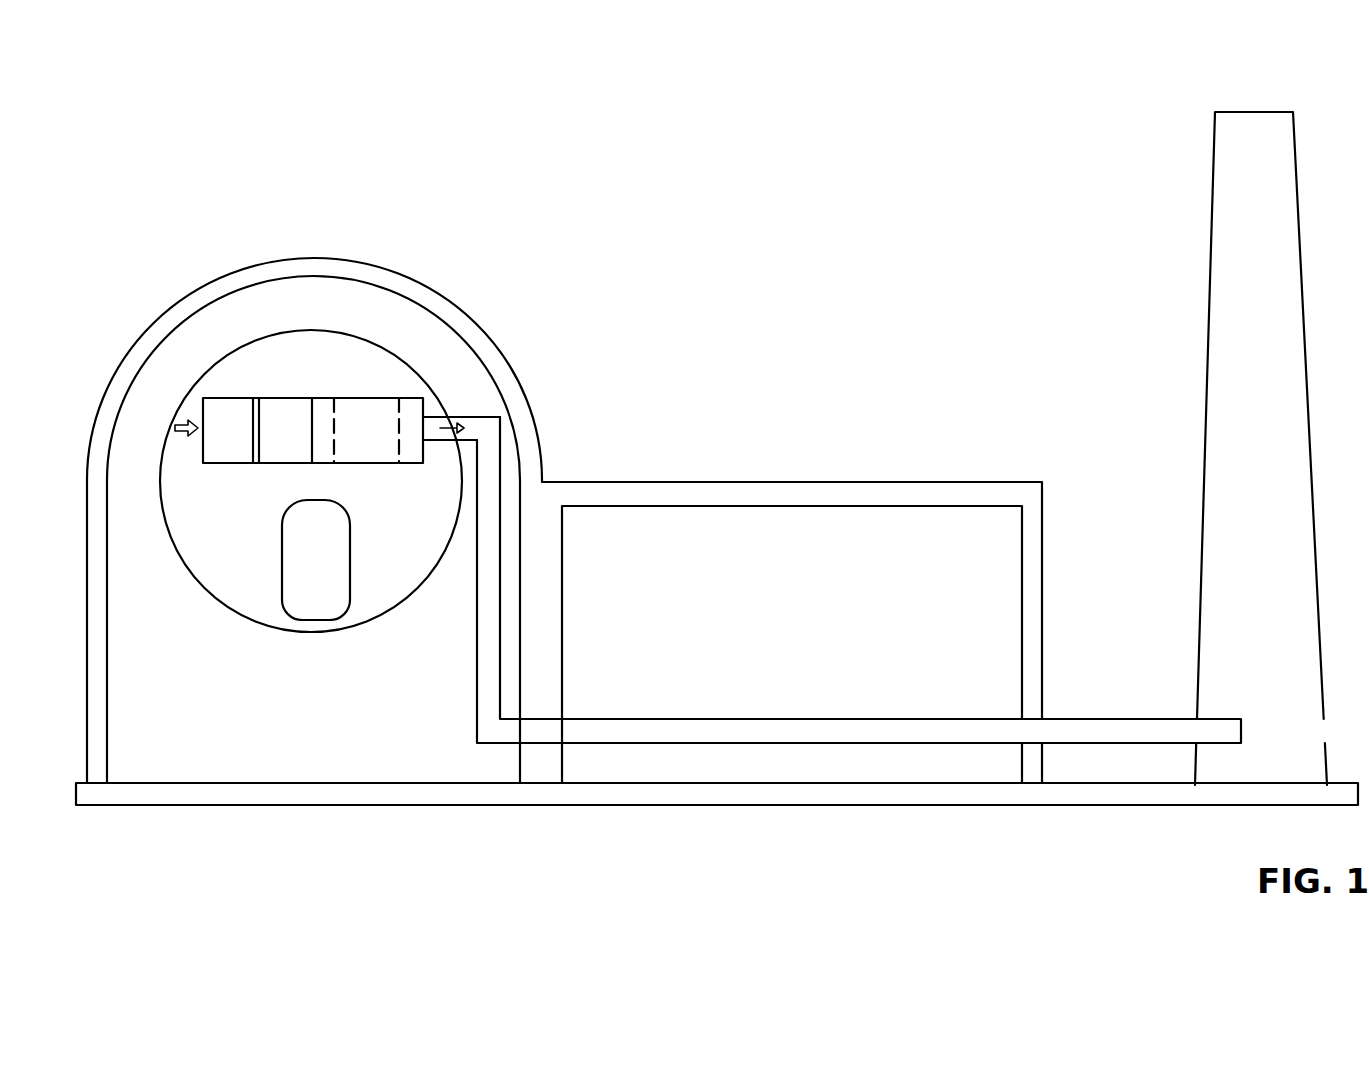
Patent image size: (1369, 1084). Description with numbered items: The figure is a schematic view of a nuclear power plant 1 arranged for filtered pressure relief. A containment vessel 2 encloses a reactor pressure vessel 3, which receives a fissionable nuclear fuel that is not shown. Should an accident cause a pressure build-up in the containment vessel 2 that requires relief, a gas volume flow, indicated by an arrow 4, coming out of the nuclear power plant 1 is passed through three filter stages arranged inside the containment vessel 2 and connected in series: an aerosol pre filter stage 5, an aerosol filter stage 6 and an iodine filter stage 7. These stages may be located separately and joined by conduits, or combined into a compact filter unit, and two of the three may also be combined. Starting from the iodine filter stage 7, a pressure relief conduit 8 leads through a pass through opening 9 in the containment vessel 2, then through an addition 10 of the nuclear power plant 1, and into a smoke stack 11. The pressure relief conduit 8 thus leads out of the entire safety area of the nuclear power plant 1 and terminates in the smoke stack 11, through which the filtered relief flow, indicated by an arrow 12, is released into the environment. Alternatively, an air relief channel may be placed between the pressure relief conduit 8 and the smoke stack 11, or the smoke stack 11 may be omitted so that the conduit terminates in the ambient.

The nuclear power plant 1 is at (695, 186).
The containment vessel 2 is at (390, 350).
The reactor pressure vessel 3 is at (282, 552).
The gas volume flow 4 is at (177, 427).
The aerosol pre filter stage 5 is at (230, 398).
The aerosol filter stage 6 is at (293, 400).
The iodine filter stage 7 is at (357, 400).
The pressure relief conduit 8 is at (433, 425).
The pass through opening 9 is at (462, 420).
The addition 10 is at (672, 588).
The smoke stack 11 is at (1230, 210).
The filtered relief flow 12 is at (468, 418).